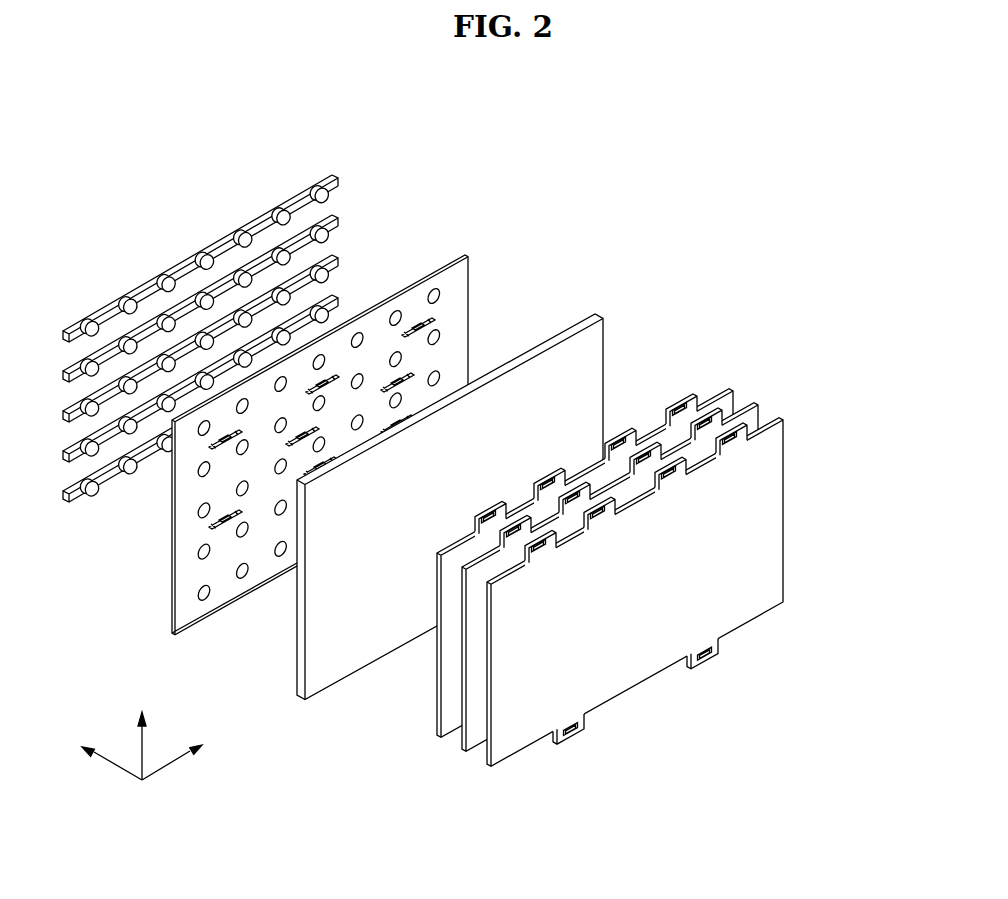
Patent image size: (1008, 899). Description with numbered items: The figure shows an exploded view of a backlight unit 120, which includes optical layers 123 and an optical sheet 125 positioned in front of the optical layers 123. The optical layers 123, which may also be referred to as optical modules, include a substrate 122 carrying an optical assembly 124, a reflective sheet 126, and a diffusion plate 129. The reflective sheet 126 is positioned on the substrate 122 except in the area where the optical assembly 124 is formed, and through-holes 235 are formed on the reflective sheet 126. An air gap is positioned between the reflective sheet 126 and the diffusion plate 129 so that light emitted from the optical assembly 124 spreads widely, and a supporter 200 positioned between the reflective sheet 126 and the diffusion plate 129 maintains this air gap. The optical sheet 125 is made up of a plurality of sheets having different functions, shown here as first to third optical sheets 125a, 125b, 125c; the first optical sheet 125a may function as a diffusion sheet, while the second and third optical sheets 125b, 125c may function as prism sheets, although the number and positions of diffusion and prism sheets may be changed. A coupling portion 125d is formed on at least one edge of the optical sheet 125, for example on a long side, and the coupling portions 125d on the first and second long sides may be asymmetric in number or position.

The backlight unit 120 is at (130, 156).
The substrate 122 is at (333, 174).
The optical layers 123 is at (647, 253).
The optical assembly 124 is at (332, 198).
The optical sheet 125 is at (862, 361).
The first optical sheet 125a is at (784, 418).
The second optical sheet 125b is at (760, 400).
The third optical sheet 125c is at (607, 525).
The coupling portion 125d is at (682, 390).
The reflective sheet 126 is at (306, 411).
The diffusion plate 129 is at (598, 317).
The supporter 200 is at (211, 520).
The through-hole 235 is at (199, 551).